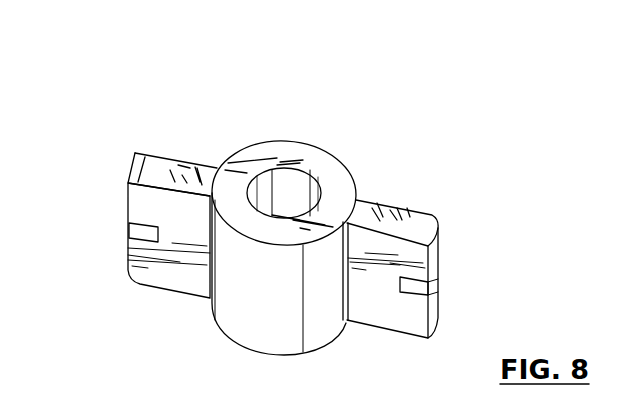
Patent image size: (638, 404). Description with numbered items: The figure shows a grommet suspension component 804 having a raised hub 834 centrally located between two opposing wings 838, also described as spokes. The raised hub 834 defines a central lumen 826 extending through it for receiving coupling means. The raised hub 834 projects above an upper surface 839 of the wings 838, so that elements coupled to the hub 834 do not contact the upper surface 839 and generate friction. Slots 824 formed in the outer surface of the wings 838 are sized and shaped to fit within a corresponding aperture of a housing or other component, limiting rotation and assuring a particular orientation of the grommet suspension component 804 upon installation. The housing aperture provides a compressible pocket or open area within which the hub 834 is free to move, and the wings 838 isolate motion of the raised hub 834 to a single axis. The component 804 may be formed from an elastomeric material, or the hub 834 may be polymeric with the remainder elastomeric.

The grommet suspension component 804 is at (420, 130).
The raised hub 834 is at (300, 138).
The central lumen 826 is at (269, 180).
The upper surface 839 is at (167, 168).
The wings 838 is at (419, 209).
The slots 824 is at (131, 226).